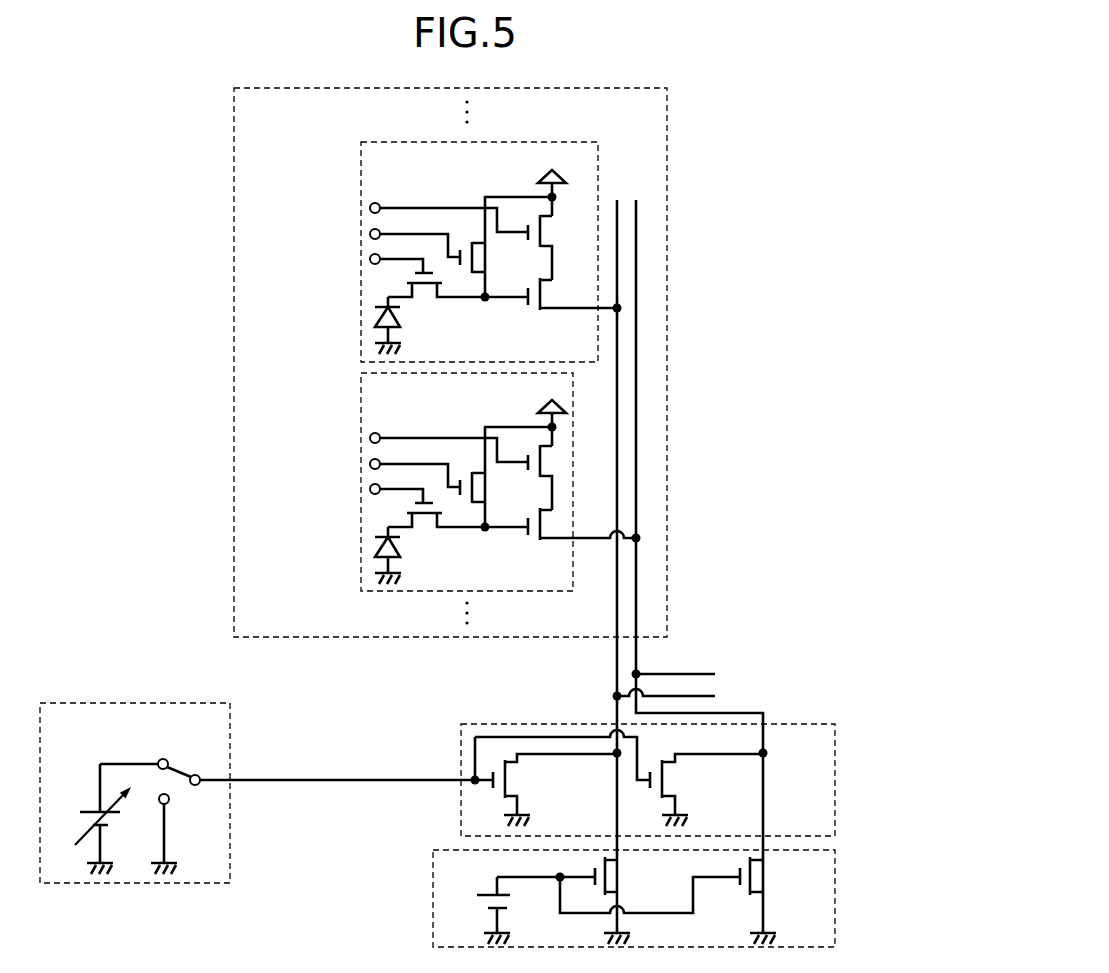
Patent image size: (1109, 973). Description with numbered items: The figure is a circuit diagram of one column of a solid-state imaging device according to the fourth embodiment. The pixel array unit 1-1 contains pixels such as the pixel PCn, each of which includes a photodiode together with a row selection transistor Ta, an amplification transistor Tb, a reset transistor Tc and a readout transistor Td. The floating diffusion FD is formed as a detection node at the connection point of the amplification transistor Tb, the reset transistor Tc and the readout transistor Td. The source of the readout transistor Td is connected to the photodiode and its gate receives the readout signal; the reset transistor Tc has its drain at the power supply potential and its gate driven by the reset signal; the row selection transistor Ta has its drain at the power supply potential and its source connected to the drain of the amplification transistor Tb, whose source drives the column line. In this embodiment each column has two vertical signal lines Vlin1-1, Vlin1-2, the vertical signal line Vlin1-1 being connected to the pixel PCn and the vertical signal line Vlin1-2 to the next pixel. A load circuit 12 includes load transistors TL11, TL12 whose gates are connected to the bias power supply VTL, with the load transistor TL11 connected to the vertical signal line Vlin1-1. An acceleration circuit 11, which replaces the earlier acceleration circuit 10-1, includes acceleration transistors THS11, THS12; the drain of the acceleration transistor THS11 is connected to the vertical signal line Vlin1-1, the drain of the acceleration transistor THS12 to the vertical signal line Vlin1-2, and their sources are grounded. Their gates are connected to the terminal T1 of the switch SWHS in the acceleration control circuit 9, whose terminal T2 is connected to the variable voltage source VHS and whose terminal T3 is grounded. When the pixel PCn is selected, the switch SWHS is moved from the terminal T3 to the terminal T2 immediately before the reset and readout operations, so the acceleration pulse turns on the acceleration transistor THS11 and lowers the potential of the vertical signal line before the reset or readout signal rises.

The pixel array unit 1-1 is at (667, 159).
The pixel PCn is at (360, 154).
The row selection transistor Ta is at (544, 232).
The amplification transistor Tb is at (544, 295).
The reset transistor Tc is at (474, 257).
The readout transistor Td is at (427, 288).
The floating diffusion FD is at (485, 302).
The vertical signal line Vlin1-1 is at (616, 656).
The vertical signal line Vlin1-2 is at (641, 656).
The acceleration circuit 10-1 is at (461, 752).
The acceleration circuit 11 is at (835, 773).
The acceleration transistor THS11 is at (508, 778).
The acceleration transistor THS12 is at (667, 778).
The load circuit 12 is at (835, 896).
The bias power supply VTL is at (486, 892).
The load transistor TL11 is at (608, 875).
The load transistor TL12 is at (752, 875).
The acceleration control circuit 9 is at (232, 825).
The variable voltage source VHS is at (93, 809).
The switch SWHS is at (182, 772).
The terminal T1 is at (198, 790).
The terminal T2 is at (158, 762).
The terminal T3 is at (161, 803).